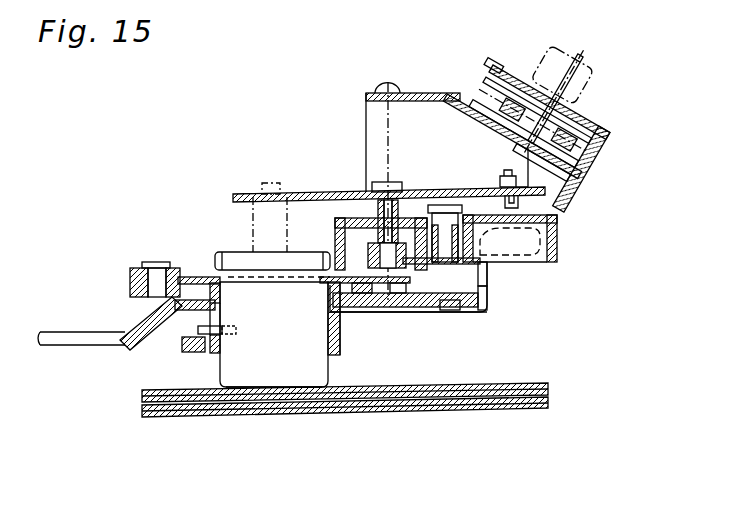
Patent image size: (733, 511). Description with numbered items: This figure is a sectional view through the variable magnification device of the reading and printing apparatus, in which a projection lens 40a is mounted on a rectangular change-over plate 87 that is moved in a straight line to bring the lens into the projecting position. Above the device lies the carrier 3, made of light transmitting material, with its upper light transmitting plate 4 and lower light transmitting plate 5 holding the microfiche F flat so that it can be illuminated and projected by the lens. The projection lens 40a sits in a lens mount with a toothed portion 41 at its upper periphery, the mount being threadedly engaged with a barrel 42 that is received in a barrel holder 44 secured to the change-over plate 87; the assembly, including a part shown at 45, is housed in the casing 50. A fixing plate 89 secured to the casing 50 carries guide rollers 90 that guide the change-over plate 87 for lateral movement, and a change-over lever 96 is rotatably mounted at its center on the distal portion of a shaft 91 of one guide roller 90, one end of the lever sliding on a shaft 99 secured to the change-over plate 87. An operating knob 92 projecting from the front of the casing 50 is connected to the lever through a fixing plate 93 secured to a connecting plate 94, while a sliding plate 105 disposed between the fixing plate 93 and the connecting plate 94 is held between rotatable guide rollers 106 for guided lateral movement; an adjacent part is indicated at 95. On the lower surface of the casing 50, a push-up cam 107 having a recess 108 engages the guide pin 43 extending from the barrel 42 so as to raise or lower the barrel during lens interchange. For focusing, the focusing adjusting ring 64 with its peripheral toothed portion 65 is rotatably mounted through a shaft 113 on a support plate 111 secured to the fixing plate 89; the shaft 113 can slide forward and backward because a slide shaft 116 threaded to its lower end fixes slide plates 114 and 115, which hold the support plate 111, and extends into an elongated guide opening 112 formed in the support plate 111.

The carrier 3 is at (388, 410).
The upper light transmitting plate 4 is at (548, 384).
The lower light transmitting plate 5 is at (518, 410).
The plate assembly E is at (465, 397).
The projection lens 40a is at (285, 378).
The toothed portion 41 is at (215, 262).
The barrel 42 is at (243, 386).
The guide pin 43 is at (203, 338).
The barrel holder 44 is at (342, 356).
The block 45 is at (218, 313).
The casing 50 is at (463, 313).
The focusing adjusting ring 64 is at (343, 220).
The toothed portion 65 is at (332, 235).
The change-over plate 87 is at (185, 280).
The fixing plate 89 is at (420, 309).
The guide roller 90 is at (130, 278).
The shaft 91 is at (395, 307).
The operating knob 92 is at (575, 70).
The fixing plate 93 is at (557, 118).
The connecting plate 94 is at (565, 160).
The support clip 95 is at (522, 207).
The change-over lever 96 is at (445, 215).
The shaft 99 is at (262, 225).
The sliding plate 105 is at (528, 167).
The guide roller 106 is at (478, 118).
The push-up cam 107 is at (183, 347).
The recess 108 is at (160, 342).
The support plate 111 is at (487, 268).
The elongated guide opening 112 is at (433, 307).
The shaft 113 is at (440, 205).
The slide plate 114 is at (400, 182).
The slide plate 115 is at (487, 288).
The slide shaft 116 is at (478, 306).